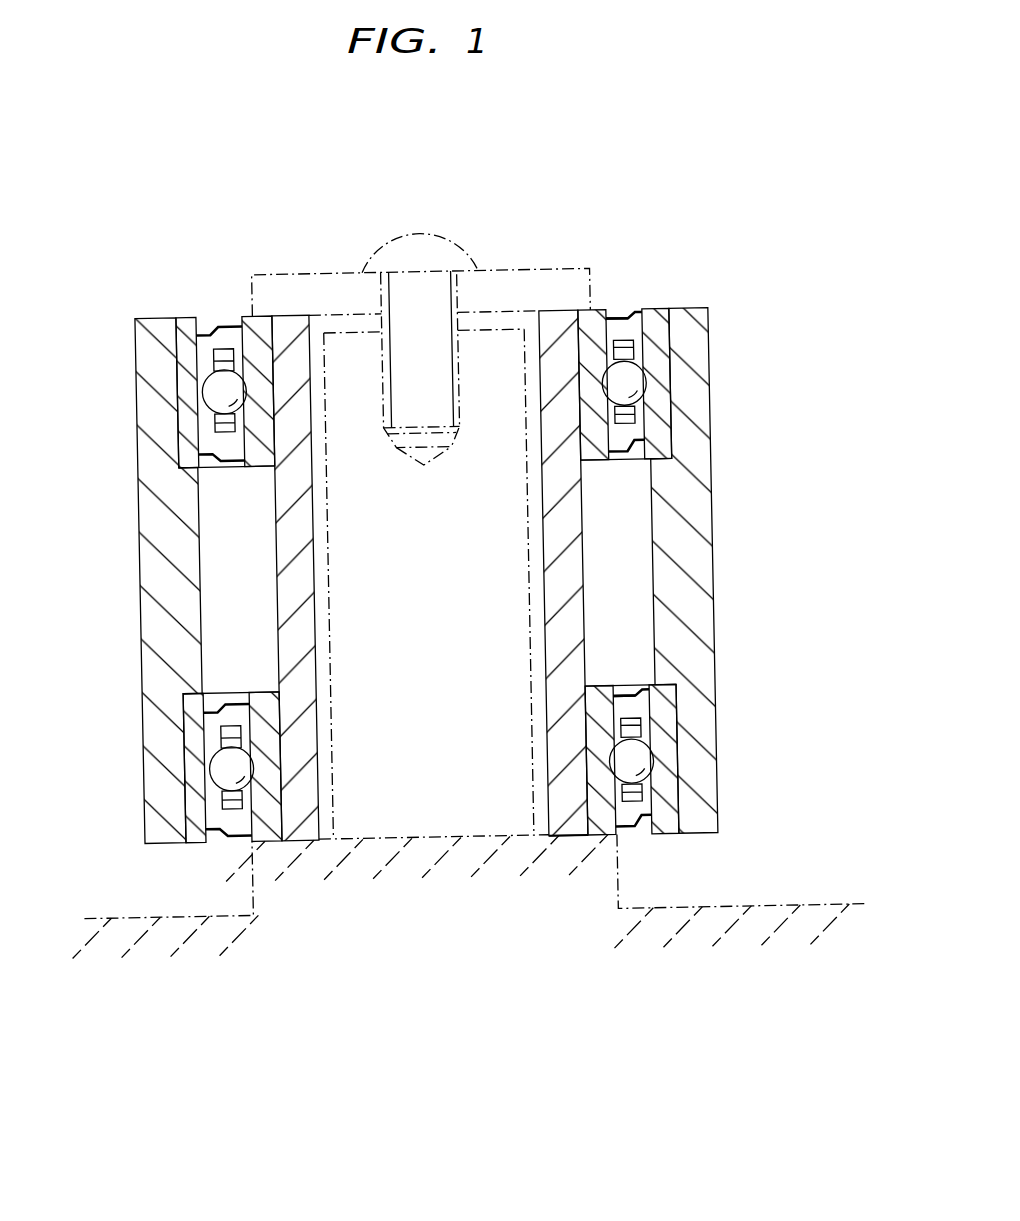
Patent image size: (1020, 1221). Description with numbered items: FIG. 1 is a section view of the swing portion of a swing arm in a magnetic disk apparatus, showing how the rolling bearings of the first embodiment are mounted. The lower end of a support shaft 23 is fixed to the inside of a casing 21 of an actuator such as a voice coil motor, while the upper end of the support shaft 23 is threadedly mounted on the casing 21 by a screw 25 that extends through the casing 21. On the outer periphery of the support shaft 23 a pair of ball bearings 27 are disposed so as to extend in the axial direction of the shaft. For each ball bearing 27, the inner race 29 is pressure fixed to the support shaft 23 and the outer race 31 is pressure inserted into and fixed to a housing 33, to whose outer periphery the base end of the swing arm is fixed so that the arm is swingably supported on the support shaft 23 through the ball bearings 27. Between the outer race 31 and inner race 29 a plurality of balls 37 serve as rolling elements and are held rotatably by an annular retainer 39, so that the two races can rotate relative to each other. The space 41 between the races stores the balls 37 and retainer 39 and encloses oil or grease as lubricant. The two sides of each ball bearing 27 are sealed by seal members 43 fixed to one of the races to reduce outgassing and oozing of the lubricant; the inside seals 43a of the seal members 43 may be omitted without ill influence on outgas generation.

The casing 21 is at (848, 905).
The support shaft 23 is at (553, 325).
The screw 25 is at (416, 236).
The ball bearing 27 is at (497, 595).
The inner race 29 is at (598, 308).
The outer race 31 is at (643, 385).
The housing 33 is at (700, 345).
The ball 37 is at (668, 389).
The retainer 39 is at (625, 322).
The space 41 is at (545, 833).
The seal member 43 is at (647, 683).
The inside seal 43a is at (627, 693).